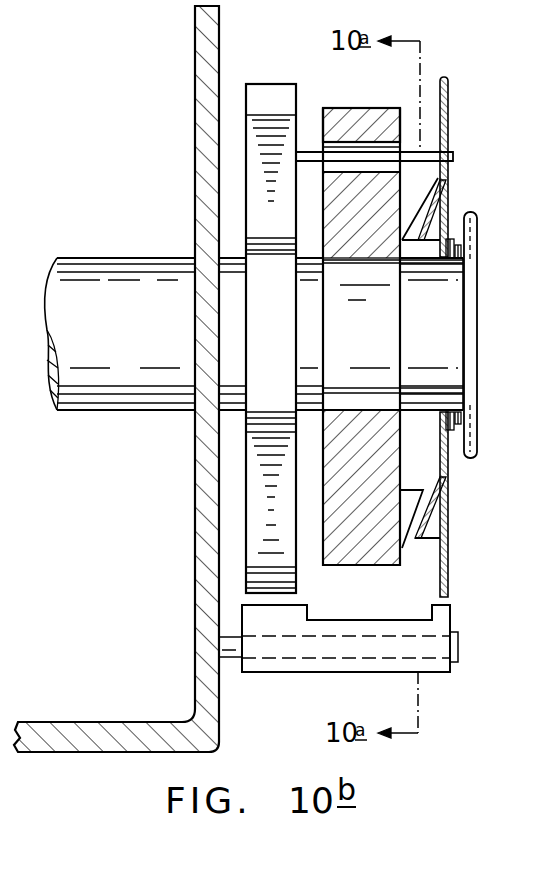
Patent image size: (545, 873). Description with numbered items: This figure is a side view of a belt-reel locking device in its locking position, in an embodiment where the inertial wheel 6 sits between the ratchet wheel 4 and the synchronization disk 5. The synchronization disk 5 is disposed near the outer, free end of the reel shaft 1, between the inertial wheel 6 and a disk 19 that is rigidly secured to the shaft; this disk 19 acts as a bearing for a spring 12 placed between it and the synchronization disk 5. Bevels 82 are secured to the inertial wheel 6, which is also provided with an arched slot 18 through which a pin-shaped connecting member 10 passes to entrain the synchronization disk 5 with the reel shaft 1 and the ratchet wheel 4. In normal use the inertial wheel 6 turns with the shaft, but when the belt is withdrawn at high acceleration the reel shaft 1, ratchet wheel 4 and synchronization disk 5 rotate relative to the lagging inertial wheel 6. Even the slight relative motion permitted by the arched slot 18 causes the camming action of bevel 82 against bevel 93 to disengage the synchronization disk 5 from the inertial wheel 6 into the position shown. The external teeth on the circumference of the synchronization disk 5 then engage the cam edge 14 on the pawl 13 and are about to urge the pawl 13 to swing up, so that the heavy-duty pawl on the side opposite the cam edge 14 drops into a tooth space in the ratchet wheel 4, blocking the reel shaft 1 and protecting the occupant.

The reel shaft 1 is at (160, 375).
The ratchet wheel 4 is at (266, 88).
The synchronization disk 5 is at (449, 110).
The inertial wheel 6 is at (371, 252).
The pin-shaped connecting member 10 is at (450, 158).
The spring 12 is at (455, 250).
The pawl 13 is at (435, 665).
The cam edge 14 is at (452, 611).
The arched slot 18 is at (358, 148).
The disk 19 is at (478, 342).
The bevel 82 is at (424, 203).
The bevel 93 is at (445, 205).